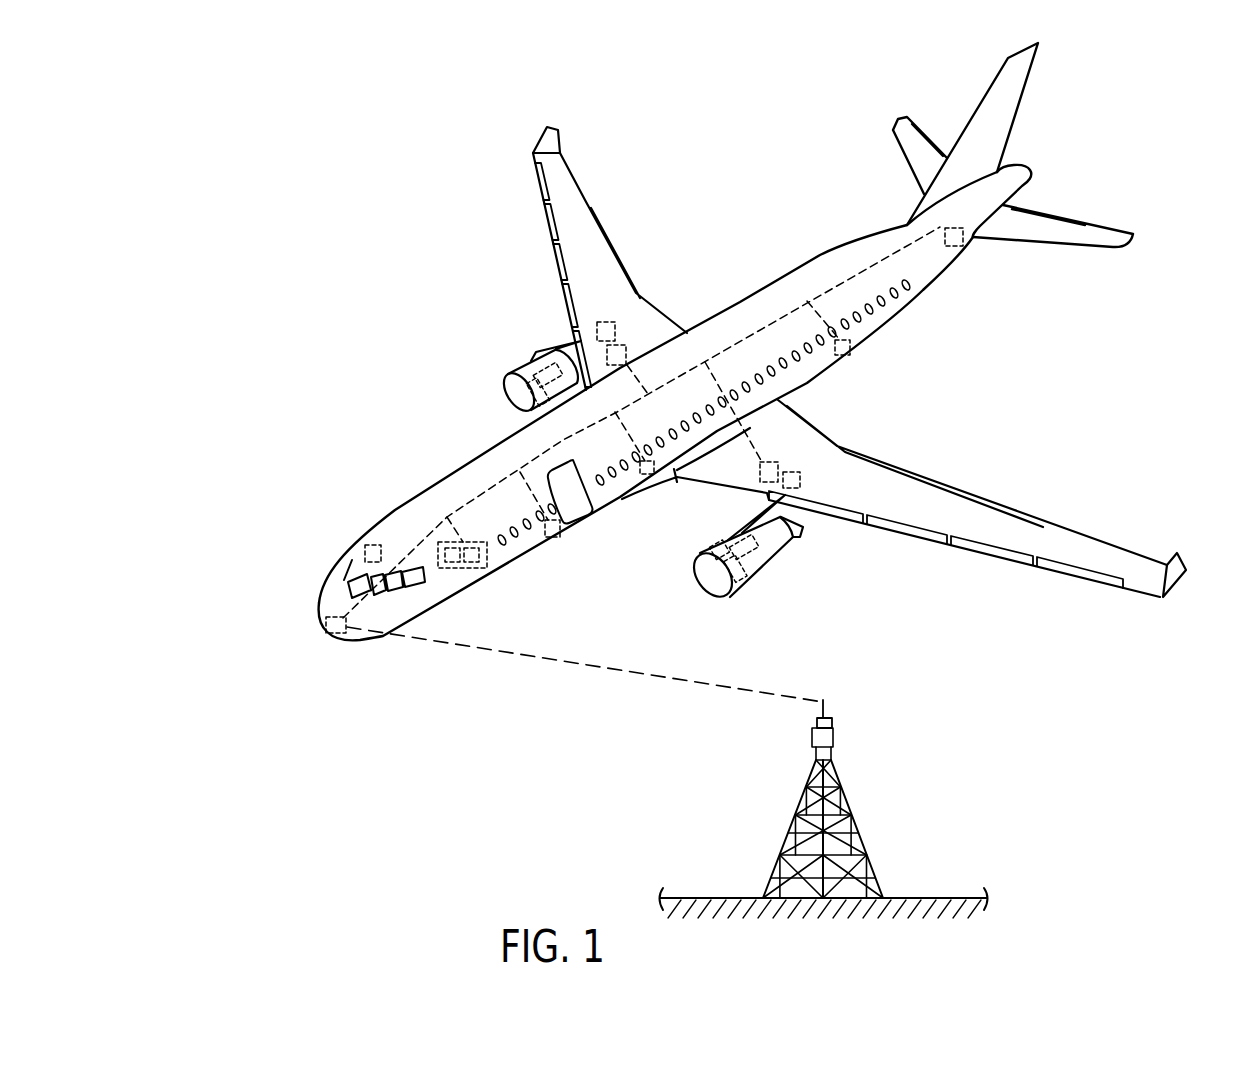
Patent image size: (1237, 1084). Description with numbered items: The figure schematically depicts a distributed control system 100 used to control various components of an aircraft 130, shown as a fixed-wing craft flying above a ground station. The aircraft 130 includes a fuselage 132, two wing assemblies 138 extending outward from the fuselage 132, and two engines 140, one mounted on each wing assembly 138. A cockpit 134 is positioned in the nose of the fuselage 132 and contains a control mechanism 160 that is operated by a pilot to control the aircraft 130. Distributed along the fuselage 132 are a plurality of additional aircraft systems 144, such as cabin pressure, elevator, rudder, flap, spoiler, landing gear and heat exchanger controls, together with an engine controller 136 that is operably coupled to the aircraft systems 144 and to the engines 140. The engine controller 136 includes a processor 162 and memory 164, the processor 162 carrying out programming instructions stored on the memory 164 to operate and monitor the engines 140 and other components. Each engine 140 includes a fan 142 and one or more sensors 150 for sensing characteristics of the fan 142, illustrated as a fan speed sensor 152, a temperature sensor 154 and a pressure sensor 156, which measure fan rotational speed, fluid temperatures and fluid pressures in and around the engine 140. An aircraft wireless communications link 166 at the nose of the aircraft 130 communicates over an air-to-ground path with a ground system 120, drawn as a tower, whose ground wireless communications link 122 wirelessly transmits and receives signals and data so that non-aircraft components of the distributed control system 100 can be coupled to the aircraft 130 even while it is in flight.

The distributed control system 100 is at (702, 480).
The ground system 120 is at (824, 787).
The ground wireless communications link 122 is at (875, 692).
The aircraft 130 is at (702, 365).
The fuselage 132 is at (776, 272).
The cockpit 134 is at (341, 540).
The engine controller 136 is at (470, 542).
The wing assembly 138 is at (561, 178).
The engine 140 is at (656, 489).
The fan 142 is at (621, 489).
The additional aircraft systems 144 is at (955, 247).
The sensors 150 is at (674, 489).
The fan speed sensor 152 is at (536, 362).
The temperature sensor 154 is at (620, 345).
The pressure sensor 156 is at (603, 320).
The control mechanism 160 is at (370, 545).
The processor 162 is at (487, 558).
The memory 164 is at (458, 568).
The aircraft wireless communications link 166 is at (325, 627).